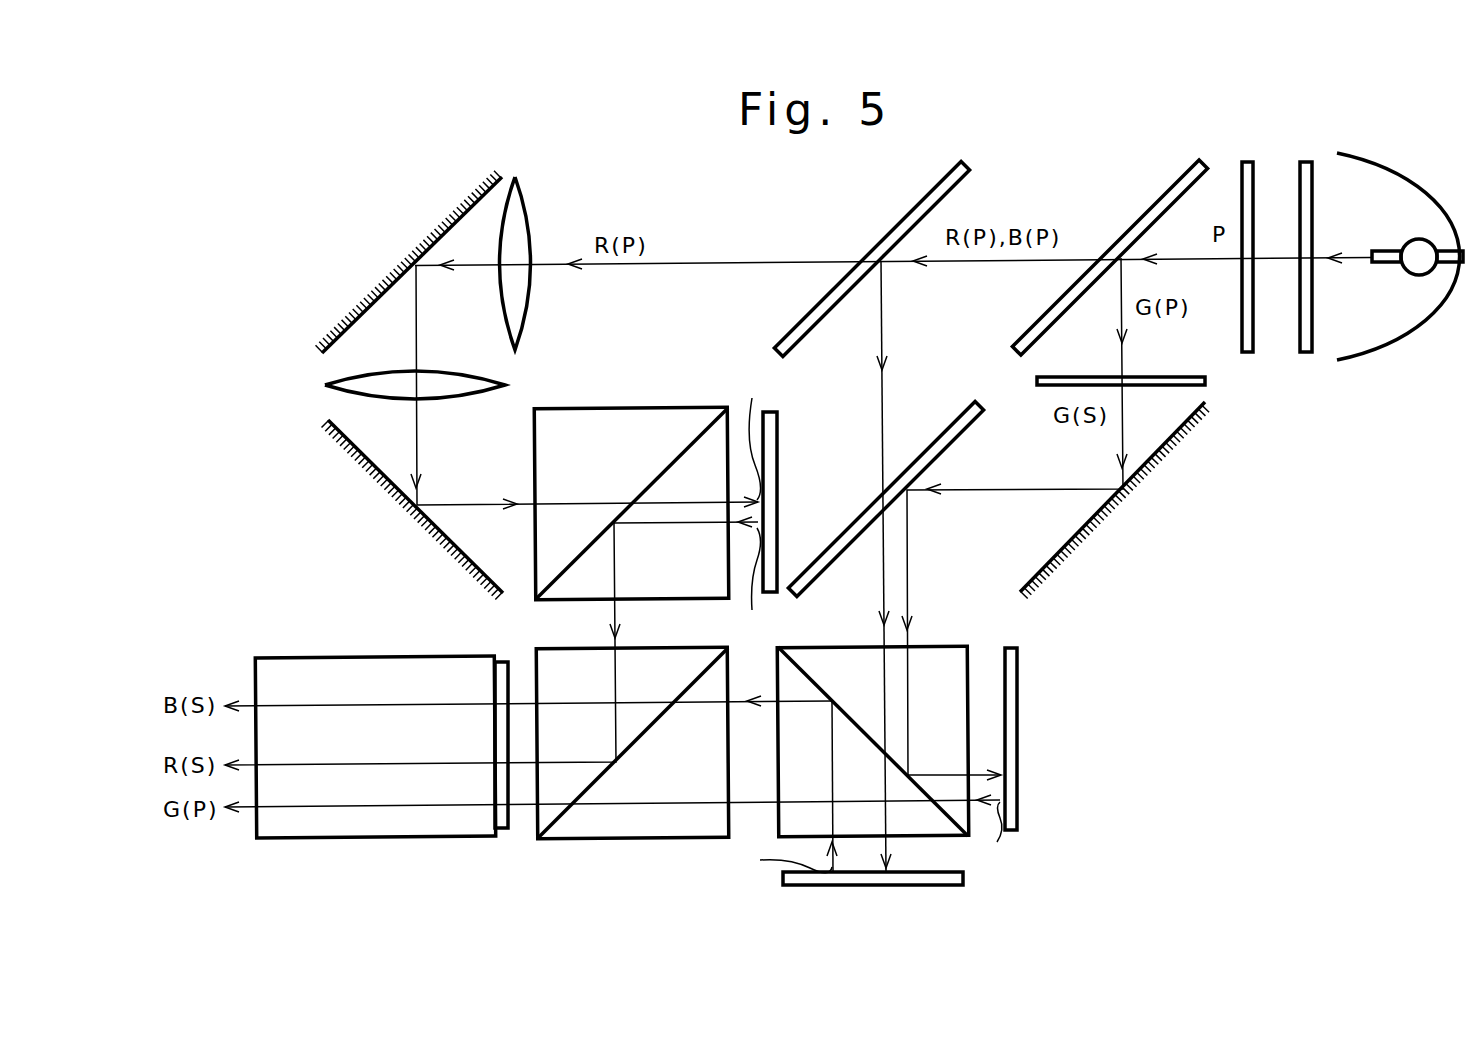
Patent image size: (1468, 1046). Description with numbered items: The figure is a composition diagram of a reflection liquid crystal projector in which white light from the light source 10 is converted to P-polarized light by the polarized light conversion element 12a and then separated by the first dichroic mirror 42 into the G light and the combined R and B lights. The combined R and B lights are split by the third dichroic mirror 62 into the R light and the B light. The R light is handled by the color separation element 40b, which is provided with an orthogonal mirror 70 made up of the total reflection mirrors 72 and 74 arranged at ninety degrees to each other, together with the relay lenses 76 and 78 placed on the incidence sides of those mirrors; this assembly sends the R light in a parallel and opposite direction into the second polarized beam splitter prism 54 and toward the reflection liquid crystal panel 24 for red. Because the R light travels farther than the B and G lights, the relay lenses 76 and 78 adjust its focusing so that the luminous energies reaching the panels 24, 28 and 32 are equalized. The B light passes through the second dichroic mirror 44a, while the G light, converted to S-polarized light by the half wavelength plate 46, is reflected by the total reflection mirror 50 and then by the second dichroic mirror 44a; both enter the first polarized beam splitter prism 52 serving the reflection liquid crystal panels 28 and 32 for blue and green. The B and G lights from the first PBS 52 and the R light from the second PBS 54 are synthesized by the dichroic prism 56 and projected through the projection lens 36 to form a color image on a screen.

The light source 10 is at (1370, 163).
The polarized light conversion element 12a is at (1318, 153).
The first dichroic mirror 42 is at (1196, 176).
The half-wave plate 46 is at (1150, 376).
The total reflection mirror 50 is at (1152, 460).
The third dichroic mirror 62 is at (950, 182).
The second dichroic mirror 44a is at (940, 443).
The color separation element 40b is at (360, 210).
The orthogonal mirror 70 is at (333, 258).
The total reflection mirror 72 is at (470, 202).
The relay lens 76 is at (517, 212).
The relay lens 78 is at (460, 383).
The total reflection mirror 74 is at (368, 472).
The second polarized beam splitter prism 54 is at (612, 420).
The reflection liquid crystal panel for red 24 is at (767, 440).
The projection lens 36 is at (325, 673).
The dichroic prism 56 is at (652, 825).
The first polarized beam splitter prism 52 is at (952, 662).
The reflection liquid crystal panel for green 32 is at (1008, 705).
The reflection liquid crystal panel for blue 28 is at (875, 880).